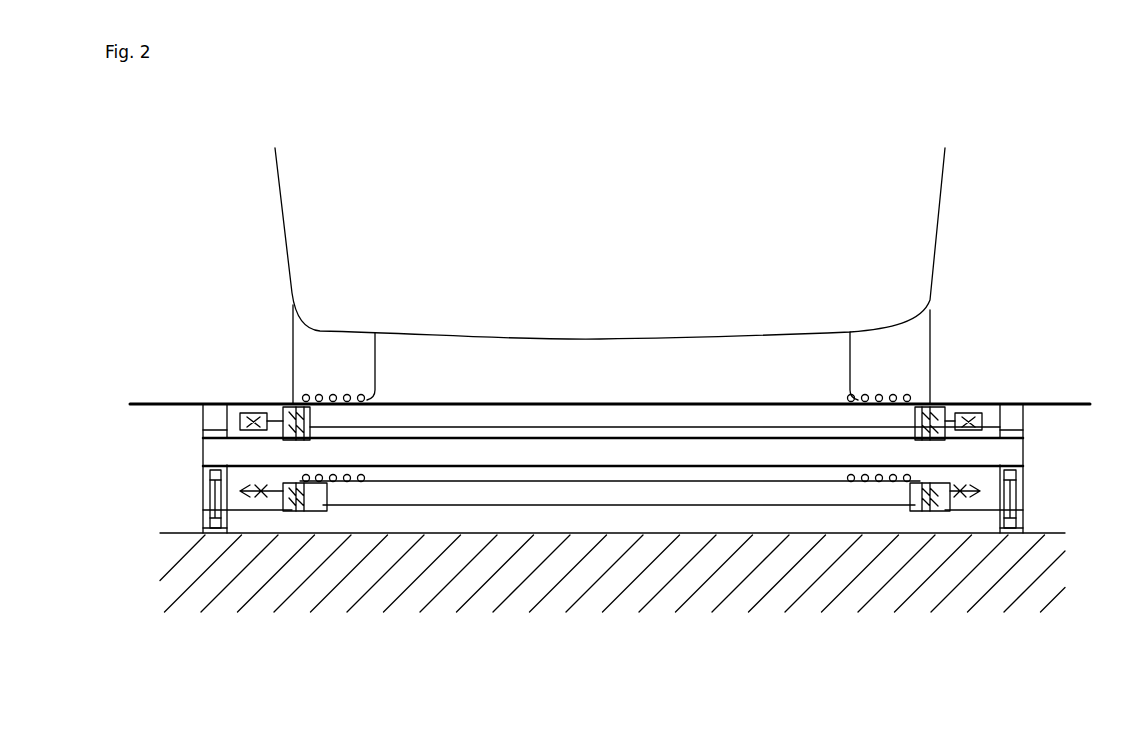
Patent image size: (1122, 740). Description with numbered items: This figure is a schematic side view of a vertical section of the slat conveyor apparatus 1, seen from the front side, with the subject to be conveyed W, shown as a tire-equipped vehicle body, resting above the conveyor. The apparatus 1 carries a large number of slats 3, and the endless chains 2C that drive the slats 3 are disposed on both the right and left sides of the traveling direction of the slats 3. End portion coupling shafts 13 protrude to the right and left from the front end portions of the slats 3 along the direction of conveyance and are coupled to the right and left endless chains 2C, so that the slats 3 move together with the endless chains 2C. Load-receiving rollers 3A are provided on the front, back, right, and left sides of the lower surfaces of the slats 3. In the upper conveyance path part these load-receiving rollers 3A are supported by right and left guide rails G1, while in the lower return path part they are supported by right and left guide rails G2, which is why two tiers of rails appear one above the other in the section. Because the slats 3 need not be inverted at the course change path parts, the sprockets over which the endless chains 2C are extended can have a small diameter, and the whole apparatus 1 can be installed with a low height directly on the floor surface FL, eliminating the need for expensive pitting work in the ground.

The subject to be conveyed W is at (947, 187).
The slat conveyor apparatus 1 is at (1001, 283).
The slat 3 is at (664, 402).
The load-receiving roller 3A is at (294, 403).
The endless chain 2C is at (241, 403).
The end portion coupling shaft 13 is at (270, 404).
The guide rail G1 is at (316, 441).
The guide rail G2 is at (318, 505).
The floor surface FL is at (1060, 533).